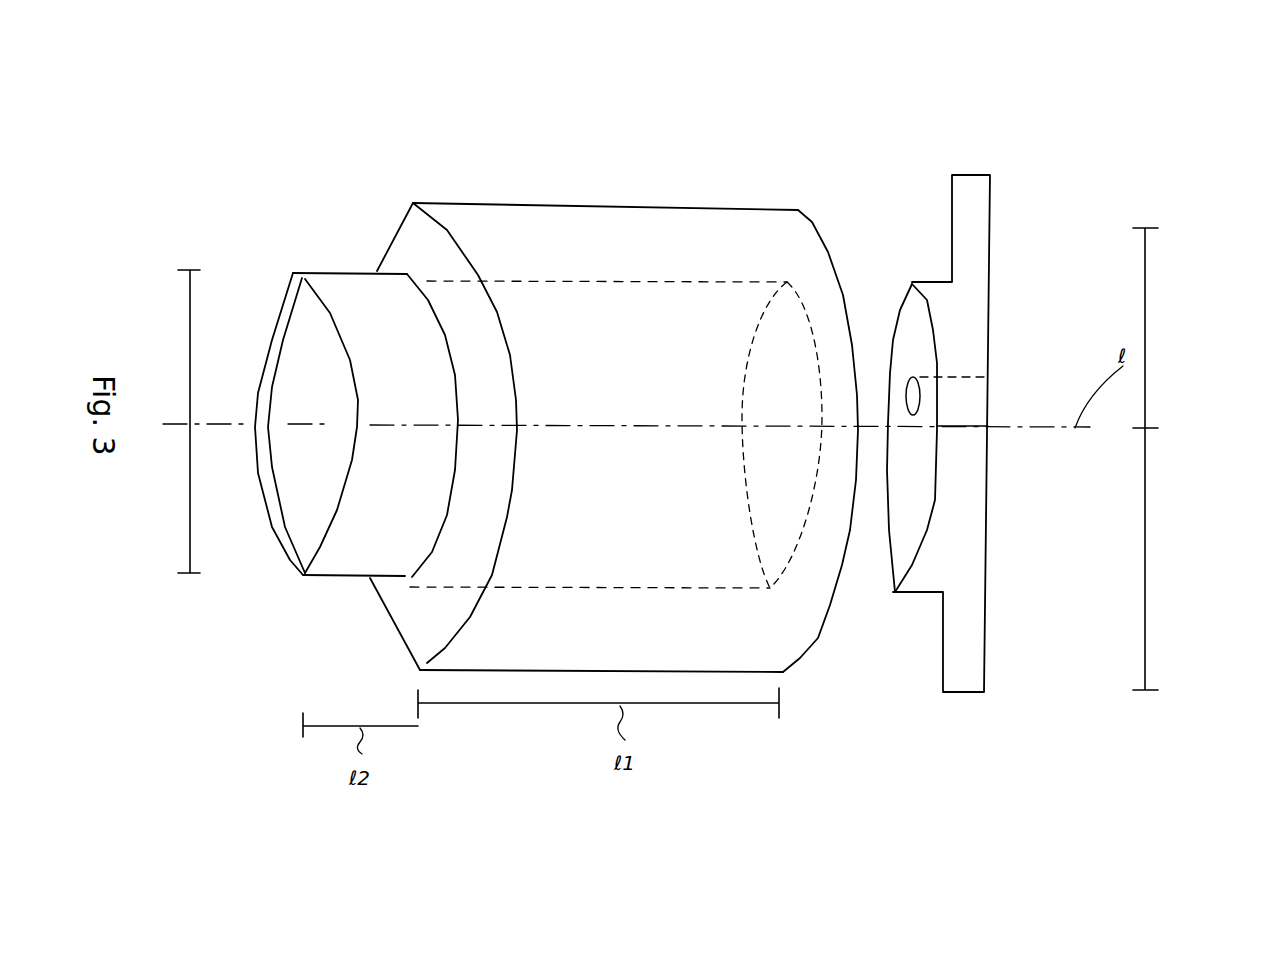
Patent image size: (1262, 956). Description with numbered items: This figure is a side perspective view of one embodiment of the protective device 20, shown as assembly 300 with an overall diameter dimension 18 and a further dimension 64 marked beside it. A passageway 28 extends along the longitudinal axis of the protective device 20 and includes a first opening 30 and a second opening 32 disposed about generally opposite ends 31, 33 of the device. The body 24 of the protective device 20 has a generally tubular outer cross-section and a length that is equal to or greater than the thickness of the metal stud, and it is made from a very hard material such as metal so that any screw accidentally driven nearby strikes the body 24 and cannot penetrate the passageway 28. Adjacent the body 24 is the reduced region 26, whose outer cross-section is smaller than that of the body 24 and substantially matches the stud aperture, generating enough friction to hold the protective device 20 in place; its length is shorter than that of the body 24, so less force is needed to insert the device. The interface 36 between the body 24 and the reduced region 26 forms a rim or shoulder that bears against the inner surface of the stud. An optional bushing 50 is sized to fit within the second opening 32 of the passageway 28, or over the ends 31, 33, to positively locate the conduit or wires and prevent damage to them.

The assembly 300 is at (1176, 103).
The protective device 20 is at (450, 747).
The outer diameter 18 is at (190, 374).
The first opening 30 is at (265, 331).
The end 31 is at (293, 195).
The reduced region 26 is at (337, 260).
The body 24 is at (609, 196).
The interface 36 is at (417, 260).
The end 33 is at (838, 206).
The passageway 28 is at (441, 255).
The second opening 32 is at (819, 356).
The bushing 50 is at (1011, 199).
The dimension 64 is at (1147, 285).